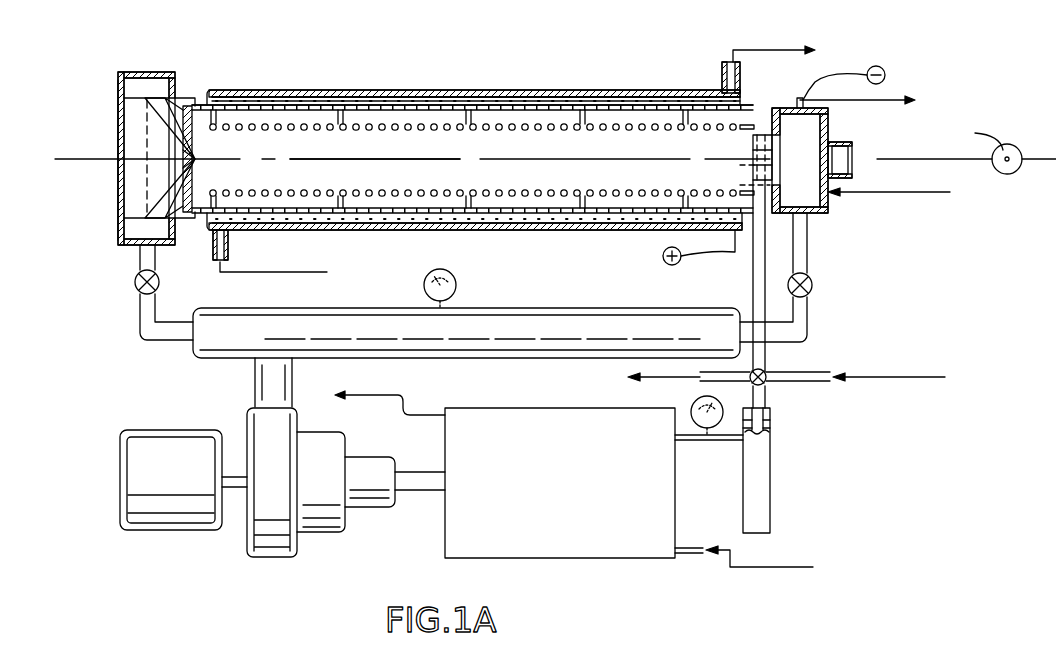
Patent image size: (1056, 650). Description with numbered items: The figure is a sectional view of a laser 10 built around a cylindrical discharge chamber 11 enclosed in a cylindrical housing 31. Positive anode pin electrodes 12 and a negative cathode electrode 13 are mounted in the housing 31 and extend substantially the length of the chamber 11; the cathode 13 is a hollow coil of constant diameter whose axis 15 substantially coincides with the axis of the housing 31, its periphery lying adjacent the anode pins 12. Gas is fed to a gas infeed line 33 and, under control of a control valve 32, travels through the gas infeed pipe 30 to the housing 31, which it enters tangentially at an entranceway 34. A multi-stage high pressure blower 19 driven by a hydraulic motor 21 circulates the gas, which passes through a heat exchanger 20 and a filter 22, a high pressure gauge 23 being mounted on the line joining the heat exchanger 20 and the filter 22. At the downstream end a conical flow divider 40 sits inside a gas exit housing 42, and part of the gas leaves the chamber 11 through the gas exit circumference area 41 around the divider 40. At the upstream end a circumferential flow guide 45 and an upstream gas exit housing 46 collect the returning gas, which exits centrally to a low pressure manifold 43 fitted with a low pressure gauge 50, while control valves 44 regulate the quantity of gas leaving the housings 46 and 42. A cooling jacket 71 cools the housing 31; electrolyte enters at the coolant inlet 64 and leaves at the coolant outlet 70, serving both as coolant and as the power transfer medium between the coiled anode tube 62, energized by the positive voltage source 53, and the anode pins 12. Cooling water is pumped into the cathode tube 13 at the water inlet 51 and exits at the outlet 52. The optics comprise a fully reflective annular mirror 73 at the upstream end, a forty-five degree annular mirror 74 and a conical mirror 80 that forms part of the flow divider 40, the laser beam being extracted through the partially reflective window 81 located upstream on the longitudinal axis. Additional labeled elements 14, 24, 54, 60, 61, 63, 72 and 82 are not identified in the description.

The laser 10 is at (403, 52).
The discharge chamber 11 is at (472, 163).
The anode pin electrodes 12 is at (504, 110).
The cathode electrode 13 is at (354, 121).
The lower electrode row 14 is at (690, 105).
The axis 15 is at (60, 160).
The blower 19 is at (275, 550).
The heat exchanger 20 is at (598, 558).
The hydraulic motor 21 is at (120, 470).
The filter 22 is at (778, 504).
The pressure gauge 23 is at (696, 402).
The connecting pipe 24 is at (686, 441).
The gas infeed pipe 30 is at (755, 246).
The housing 31 is at (386, 101).
The control valve 32 is at (766, 382).
The gas infeed line 33 is at (808, 372).
The entranceway 34 is at (745, 165).
The conical flow divider 40 is at (130, 170).
The gas exit circumference area 41 is at (138, 92).
The gas exit housing 42 is at (120, 96).
The low pressure manifold 43 is at (505, 318).
The control valves 44 is at (134, 283).
The circumferential flow guide 45 is at (753, 152).
The upstream gas exit housing 46 is at (830, 205).
The low pressure gauge 50 is at (424, 285).
The water inlet 51 is at (900, 197).
The outlet 52 is at (747, 124).
The positive voltage source 53 is at (662, 257).
The negative terminal 54 is at (920, 86).
The cooling water inlet 60 is at (800, 586).
The outlet 61 is at (420, 410).
The anode tube 62 is at (285, 100).
The lower cooling jacket 63 is at (556, 105).
The coolant inlet 64 is at (230, 250).
The coolant outlet 70 is at (740, 76).
The cooling jacket 71 is at (462, 101).
The electrolyte inlet 72 is at (320, 292).
The annular mirror 73 is at (812, 228).
The annular mirror 74 is at (188, 106).
The conical mirror 80 is at (197, 166).
The partially reflective window 81 is at (853, 160).
The electrode support 82 is at (620, 124).